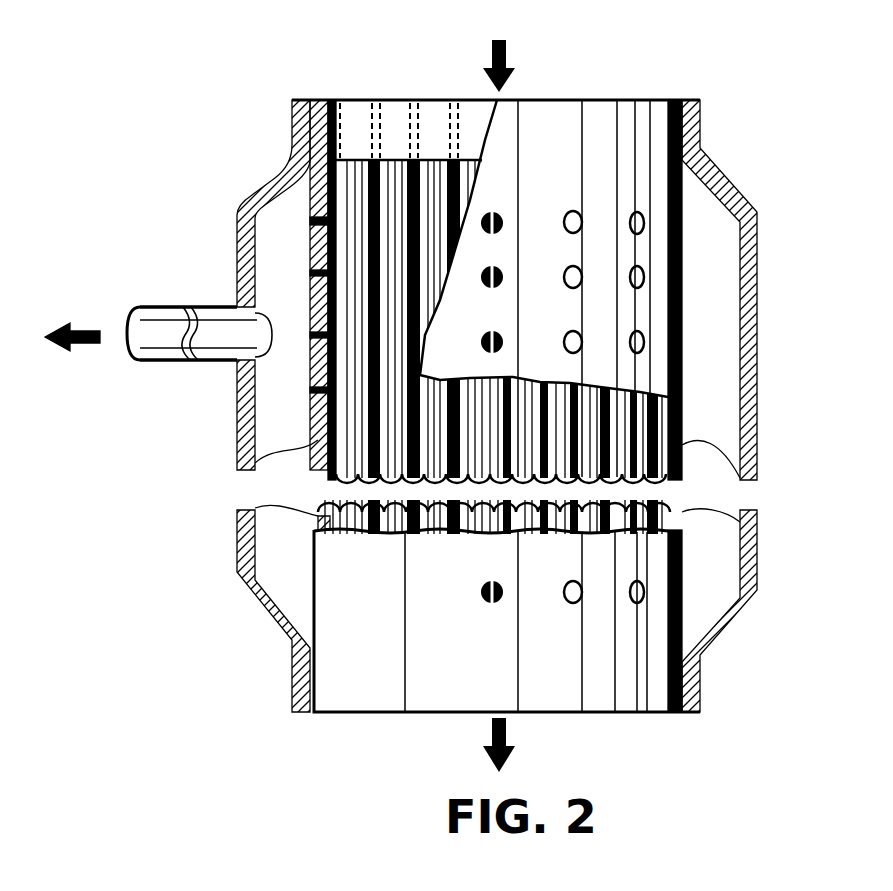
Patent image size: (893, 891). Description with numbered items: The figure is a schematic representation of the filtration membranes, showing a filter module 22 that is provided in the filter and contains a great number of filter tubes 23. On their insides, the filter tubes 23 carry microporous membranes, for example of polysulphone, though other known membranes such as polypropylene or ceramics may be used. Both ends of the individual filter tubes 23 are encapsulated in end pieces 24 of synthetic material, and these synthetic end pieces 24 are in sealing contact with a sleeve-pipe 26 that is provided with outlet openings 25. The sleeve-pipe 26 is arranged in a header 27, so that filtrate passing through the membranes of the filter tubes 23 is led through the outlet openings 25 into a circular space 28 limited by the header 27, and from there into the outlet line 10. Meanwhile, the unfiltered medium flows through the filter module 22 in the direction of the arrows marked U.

The outlet line 10 is at (100, 304).
The filter module 22 is at (570, 80).
The filter tubes 23 is at (377, 500).
The end pieces 24 is at (347, 142).
The outlet openings 25 is at (310, 390).
The sleeve-pipe 26 is at (640, 148).
The header 27 is at (737, 198).
The circular space 28 is at (710, 317).